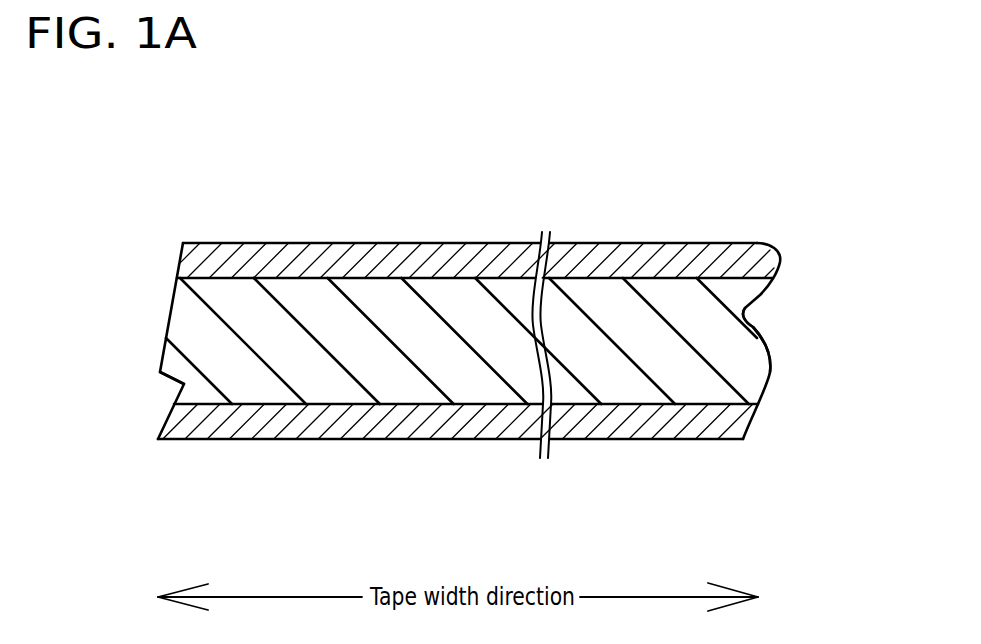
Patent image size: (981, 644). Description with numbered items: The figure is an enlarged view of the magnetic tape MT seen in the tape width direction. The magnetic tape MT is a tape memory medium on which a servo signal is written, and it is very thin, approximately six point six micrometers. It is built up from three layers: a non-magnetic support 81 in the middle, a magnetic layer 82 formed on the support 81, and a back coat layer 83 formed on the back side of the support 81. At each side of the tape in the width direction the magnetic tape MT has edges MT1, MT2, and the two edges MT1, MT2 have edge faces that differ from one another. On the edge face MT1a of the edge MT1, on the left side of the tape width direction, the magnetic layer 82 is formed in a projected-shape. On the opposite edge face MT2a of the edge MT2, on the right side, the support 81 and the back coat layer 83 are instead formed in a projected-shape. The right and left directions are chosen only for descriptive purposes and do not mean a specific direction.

The magnetic tape MT is at (695, 190).
The non-magnetic support 81 is at (257, 300).
The magnetic layer 82 is at (358, 258).
The back coat layer 83 is at (403, 423).
The edge MT1 is at (158, 457).
The edge MT2 is at (737, 452).
The edge face MT1a is at (160, 372).
The edge face MT2a is at (772, 350).